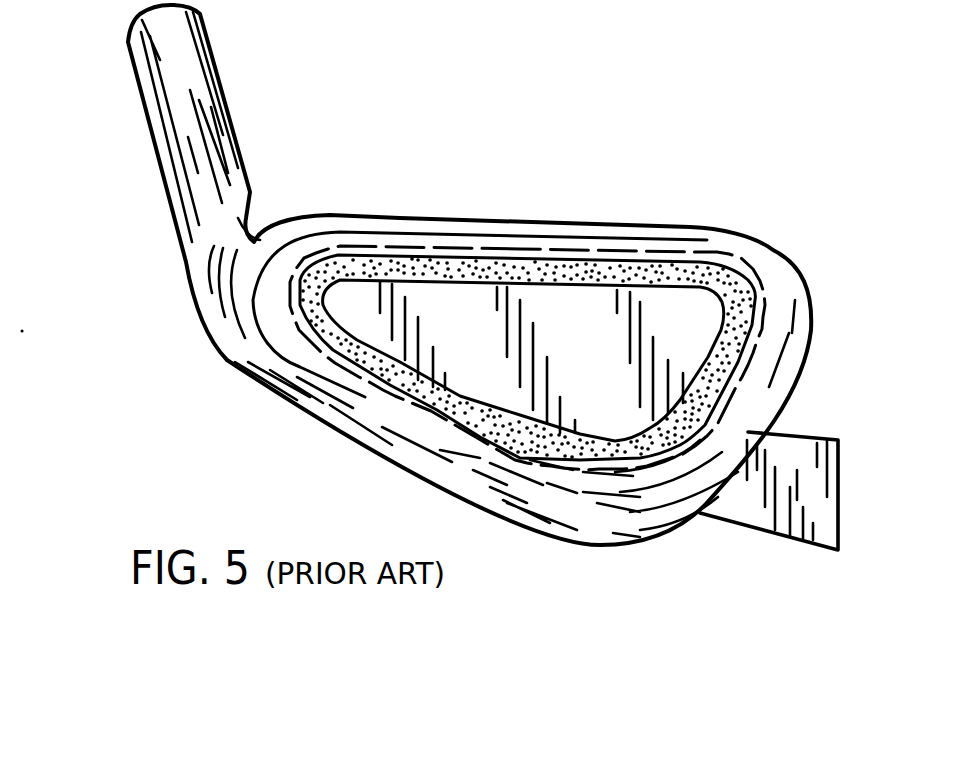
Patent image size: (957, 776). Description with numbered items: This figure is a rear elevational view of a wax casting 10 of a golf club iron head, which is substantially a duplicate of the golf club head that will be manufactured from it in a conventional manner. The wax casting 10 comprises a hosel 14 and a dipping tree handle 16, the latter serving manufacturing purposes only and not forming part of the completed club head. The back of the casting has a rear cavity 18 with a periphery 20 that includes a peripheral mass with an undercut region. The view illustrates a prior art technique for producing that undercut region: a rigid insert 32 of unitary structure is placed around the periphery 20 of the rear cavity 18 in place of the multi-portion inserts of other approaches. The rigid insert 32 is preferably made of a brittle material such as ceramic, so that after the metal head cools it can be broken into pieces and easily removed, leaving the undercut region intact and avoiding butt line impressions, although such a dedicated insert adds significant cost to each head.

The wax casting 10 is at (565, 585).
The hosel 14 is at (183, 115).
The dipping tree handle 16 is at (798, 440).
The rear cavity 18 is at (600, 360).
The periphery 20 is at (393, 218).
The rigid insert 32 is at (460, 410).